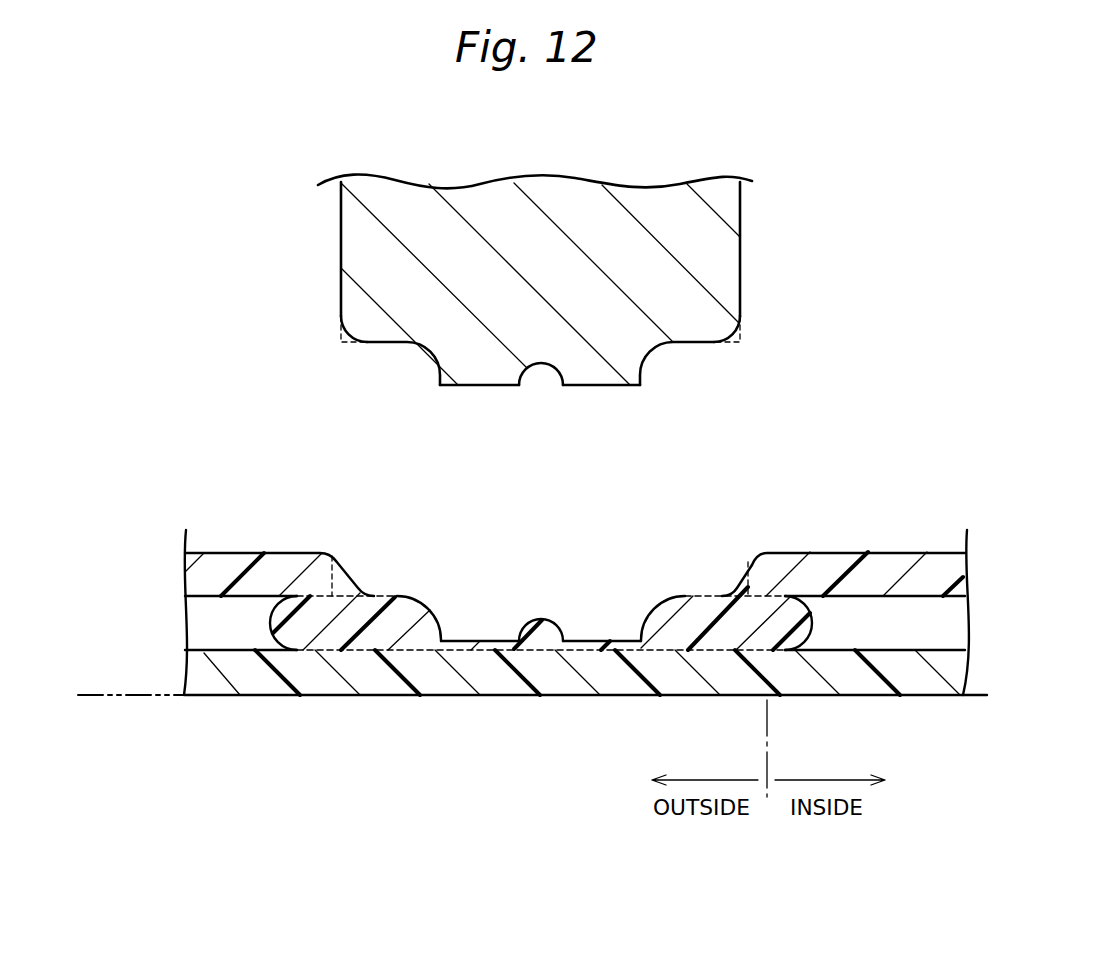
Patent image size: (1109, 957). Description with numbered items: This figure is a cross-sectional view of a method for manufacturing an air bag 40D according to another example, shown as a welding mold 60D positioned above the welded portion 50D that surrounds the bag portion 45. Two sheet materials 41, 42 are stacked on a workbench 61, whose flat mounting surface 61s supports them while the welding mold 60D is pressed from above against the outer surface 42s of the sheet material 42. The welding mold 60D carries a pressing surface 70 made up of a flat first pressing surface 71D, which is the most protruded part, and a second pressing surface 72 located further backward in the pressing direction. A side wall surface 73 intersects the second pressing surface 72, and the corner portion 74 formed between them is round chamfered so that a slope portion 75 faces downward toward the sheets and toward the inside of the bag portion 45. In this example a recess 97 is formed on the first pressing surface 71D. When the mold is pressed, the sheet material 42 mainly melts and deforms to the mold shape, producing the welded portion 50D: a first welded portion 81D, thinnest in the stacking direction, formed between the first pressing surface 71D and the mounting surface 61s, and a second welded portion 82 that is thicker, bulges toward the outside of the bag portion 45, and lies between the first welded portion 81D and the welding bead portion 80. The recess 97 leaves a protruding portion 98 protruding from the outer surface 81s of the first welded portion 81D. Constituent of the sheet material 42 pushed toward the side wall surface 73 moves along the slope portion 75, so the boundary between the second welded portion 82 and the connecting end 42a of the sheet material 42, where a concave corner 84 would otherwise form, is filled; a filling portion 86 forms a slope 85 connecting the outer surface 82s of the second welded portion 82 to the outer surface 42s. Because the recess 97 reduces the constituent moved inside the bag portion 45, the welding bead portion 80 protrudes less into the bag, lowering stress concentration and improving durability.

The air bag 40D is at (569, 584).
The sheet material 41 is at (871, 697).
The sheet material 42 is at (575, 514).
The outer surface 42s is at (575, 514).
The connecting end 42a is at (320, 551).
The bag portion 45 is at (544, 514).
The welded portion 50D is at (537, 563).
The welding mold 60D is at (539, 320).
The workbench 61 is at (126, 647).
The mounting surface 61s is at (93, 692).
The pressing surface 70 is at (539, 310).
The first pressing surface 71D is at (595, 387).
The second pressing surface 72 is at (388, 345).
The side wall surface 73 is at (341, 245).
The corner portion 74 is at (341, 343).
The slope portion 75 is at (341, 333).
The welding bead portion 80 is at (274, 620).
The first welded portion 81D is at (541, 620).
The outer surface 81s is at (483, 616).
The second welded portion 82 is at (537, 593).
The outer surface 82s is at (388, 595).
The corner 84 is at (343, 567).
The slope 85 is at (544, 535).
The filling portion 86 is at (352, 584).
The recess 97 is at (541, 362).
The protruding portion 98 is at (545, 612).